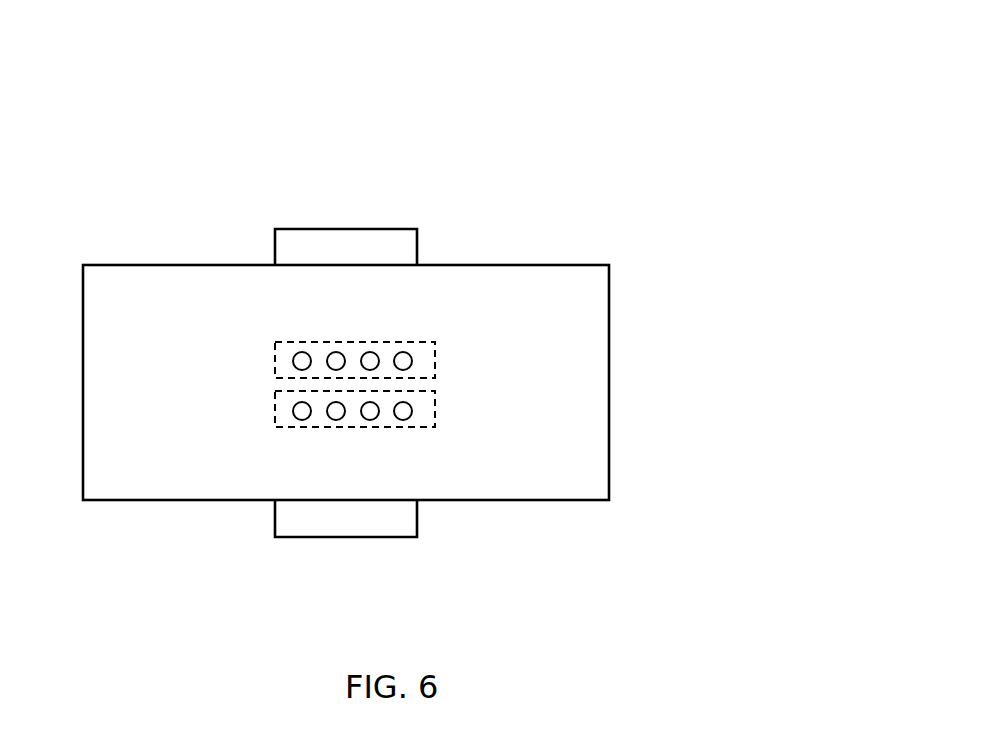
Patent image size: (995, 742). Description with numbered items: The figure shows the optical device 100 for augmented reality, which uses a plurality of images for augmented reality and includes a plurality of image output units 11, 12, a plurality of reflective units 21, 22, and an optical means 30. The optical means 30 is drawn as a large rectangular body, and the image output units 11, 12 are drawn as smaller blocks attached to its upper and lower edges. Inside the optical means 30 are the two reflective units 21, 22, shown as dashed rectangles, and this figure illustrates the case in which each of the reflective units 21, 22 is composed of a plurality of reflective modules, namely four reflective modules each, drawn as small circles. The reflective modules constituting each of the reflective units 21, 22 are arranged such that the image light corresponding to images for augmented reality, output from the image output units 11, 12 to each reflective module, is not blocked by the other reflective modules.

The optical device for augmented reality 100 is at (533, 144).
The optical means 30 is at (609, 383).
The image output unit 11 is at (390, 229).
The image output unit 12 is at (390, 537).
The reflective unit 21 is at (435, 358).
The reflective unit 22 is at (275, 413).